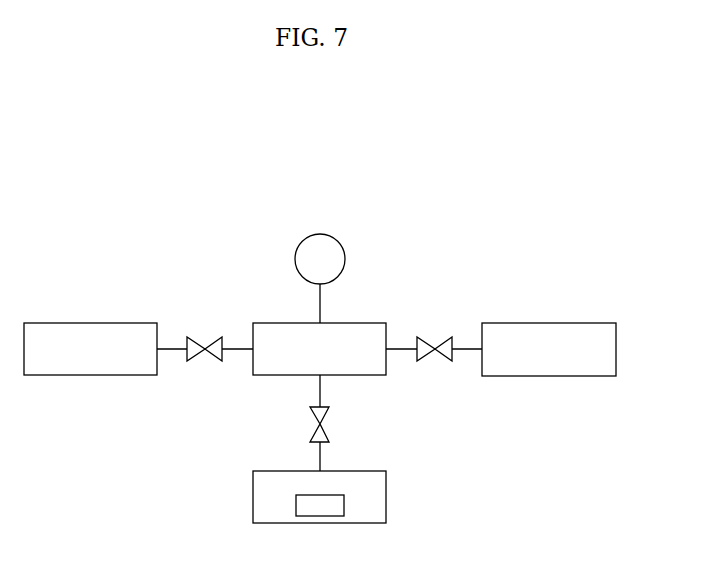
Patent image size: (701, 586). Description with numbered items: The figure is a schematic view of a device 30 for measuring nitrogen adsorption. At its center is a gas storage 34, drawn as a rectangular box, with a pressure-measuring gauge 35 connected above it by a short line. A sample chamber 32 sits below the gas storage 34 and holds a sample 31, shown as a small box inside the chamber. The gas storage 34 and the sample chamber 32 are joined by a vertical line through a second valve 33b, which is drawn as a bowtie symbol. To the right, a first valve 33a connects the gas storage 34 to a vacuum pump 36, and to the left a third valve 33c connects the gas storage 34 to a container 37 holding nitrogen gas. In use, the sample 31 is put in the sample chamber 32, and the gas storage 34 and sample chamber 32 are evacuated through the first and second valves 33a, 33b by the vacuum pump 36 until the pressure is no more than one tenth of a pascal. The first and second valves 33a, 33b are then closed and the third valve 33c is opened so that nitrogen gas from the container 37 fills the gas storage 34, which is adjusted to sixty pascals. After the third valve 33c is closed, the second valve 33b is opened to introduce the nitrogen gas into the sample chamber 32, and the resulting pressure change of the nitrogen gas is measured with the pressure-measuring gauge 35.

The refrigerant supply system 30 is at (447, 216).
The sample 31 is at (320, 520).
The sample chamber 32 is at (388, 497).
The first valve 33a is at (427, 360).
The second valve 33b is at (331, 428).
The third valve 33c is at (212, 335).
The gas storage 34 is at (370, 322).
The pressure-measuring gauge 35 is at (318, 233).
The vacuum pump 36 is at (549, 322).
The container 37 is at (86, 322).